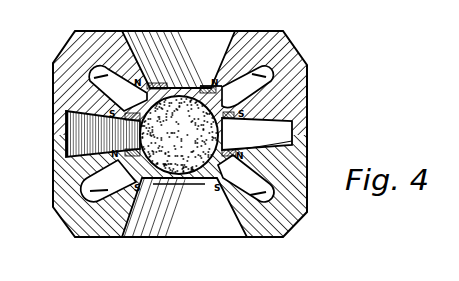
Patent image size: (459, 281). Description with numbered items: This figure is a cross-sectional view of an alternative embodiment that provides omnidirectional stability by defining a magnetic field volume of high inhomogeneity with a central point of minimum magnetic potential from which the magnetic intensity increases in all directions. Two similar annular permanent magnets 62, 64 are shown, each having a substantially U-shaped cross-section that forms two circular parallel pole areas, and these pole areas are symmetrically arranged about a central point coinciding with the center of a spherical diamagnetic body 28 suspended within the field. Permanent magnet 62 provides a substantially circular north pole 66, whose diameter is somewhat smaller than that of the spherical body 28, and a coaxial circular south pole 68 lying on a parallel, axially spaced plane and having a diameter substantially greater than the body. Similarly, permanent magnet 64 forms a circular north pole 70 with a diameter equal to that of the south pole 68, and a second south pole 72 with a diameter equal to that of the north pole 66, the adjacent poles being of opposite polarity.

The spherical diamagnetic body 28 is at (181, 152).
The annular permanent magnet 62 is at (297, 50).
The annular permanent magnet 64 is at (291, 229).
The north pole 66 is at (192, 88).
The south pole 68 is at (240, 107).
The north pole 70 is at (292, 143).
The second south pole 72 is at (205, 178).